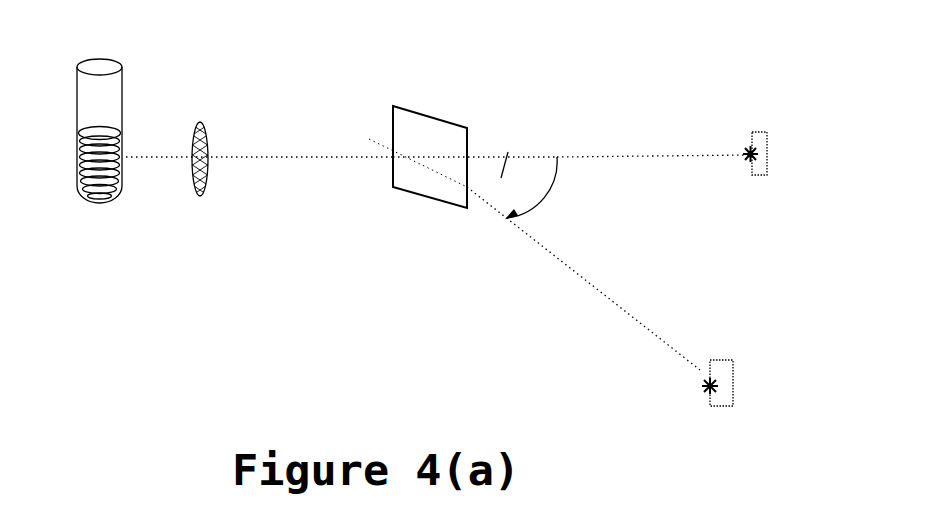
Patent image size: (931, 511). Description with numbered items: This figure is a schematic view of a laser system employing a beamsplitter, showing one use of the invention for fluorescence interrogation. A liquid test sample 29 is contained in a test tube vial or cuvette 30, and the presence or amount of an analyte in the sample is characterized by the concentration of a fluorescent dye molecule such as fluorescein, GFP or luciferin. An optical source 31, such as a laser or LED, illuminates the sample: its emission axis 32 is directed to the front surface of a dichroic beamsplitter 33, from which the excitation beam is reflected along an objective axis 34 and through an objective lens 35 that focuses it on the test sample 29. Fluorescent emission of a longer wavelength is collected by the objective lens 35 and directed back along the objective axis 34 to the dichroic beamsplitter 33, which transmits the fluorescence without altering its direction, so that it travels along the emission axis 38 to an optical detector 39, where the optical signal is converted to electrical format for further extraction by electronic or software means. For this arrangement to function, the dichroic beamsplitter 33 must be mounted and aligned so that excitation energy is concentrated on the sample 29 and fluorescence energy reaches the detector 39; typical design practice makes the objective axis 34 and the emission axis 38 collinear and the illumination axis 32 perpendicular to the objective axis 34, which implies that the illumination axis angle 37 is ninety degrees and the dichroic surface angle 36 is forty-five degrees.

The liquid test sample 29 is at (83, 215).
The test tube vial or cuvette 30 is at (73, 51).
The optical source 31 is at (747, 345).
The emission axis 32 is at (661, 355).
The dichroic beamsplitter 33 is at (405, 203).
The objective axis 34 is at (302, 173).
The objective lens 35 is at (191, 211).
The dichroic surface angle 36 is at (519, 170).
The illumination axis angle 37 is at (540, 187).
The emission axis 38 is at (685, 164).
The optical detector 39 is at (782, 168).